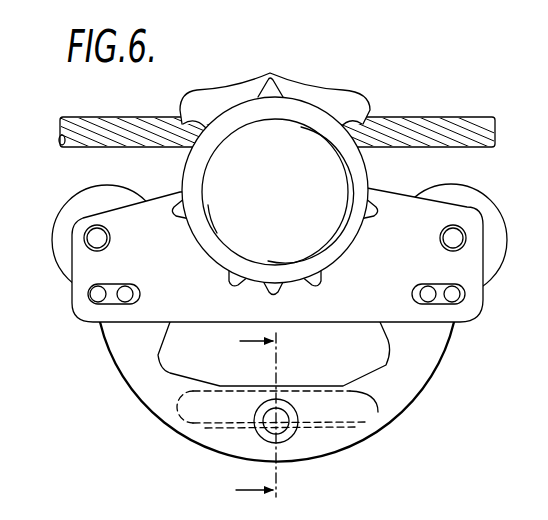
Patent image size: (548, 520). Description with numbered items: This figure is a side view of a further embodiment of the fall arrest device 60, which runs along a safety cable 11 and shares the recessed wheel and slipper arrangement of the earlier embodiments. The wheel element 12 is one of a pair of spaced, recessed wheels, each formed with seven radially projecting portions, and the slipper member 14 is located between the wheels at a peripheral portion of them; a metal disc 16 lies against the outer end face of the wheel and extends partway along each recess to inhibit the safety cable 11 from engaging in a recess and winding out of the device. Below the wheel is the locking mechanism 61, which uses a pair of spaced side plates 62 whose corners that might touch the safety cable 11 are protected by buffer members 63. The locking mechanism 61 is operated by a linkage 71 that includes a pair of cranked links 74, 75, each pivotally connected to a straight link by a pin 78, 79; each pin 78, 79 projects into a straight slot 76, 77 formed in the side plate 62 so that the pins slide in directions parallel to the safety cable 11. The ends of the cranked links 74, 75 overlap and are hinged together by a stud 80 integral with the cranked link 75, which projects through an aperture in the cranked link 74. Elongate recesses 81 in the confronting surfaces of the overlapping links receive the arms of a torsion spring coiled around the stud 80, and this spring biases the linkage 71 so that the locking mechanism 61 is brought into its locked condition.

The safety cable 11 is at (124, 116).
The wheel element 12 is at (276, 86).
The slipper member 14 is at (202, 102).
The metal disc 16 is at (330, 132).
The fall arrest device 60 is at (426, 91).
The locking mechanism 61 is at (244, 413).
The side plate 62 is at (472, 312).
The buffer member 63 is at (78, 200).
The linkage 71 is at (197, 446).
The cranked link 74 is at (393, 410).
The cranked link 75 is at (157, 401).
The straight slot 76 is at (452, 293).
The straight slot 77 is at (103, 287).
The pin 78 is at (428, 297).
The pin 79 is at (122, 296).
The stud 80 is at (283, 425).
The elongate recess 81 is at (392, 395).